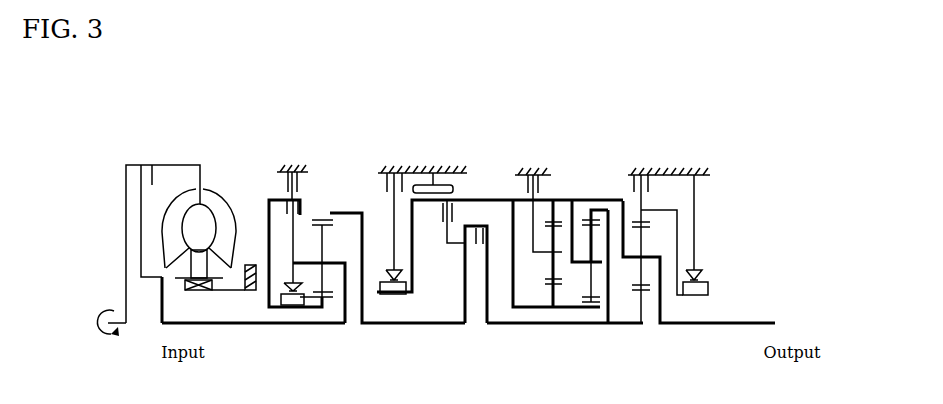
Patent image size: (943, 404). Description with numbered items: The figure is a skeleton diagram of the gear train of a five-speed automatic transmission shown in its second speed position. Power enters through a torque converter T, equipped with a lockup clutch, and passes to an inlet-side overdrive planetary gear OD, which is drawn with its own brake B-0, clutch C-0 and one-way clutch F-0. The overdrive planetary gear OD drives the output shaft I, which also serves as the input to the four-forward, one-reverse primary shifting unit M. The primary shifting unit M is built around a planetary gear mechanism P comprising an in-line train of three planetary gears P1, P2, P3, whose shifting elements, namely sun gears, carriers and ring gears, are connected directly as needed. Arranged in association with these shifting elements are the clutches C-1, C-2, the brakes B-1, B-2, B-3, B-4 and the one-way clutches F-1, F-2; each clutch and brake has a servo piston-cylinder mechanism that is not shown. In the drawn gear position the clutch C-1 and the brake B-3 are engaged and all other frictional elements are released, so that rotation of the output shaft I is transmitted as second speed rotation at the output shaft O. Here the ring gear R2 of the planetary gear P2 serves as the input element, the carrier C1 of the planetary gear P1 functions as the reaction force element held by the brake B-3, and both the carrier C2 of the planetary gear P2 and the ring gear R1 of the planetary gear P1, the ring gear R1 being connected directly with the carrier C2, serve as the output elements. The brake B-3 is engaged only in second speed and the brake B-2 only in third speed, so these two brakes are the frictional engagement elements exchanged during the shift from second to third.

The torque converter T is at (181, 165).
The inlet-side overdrive planetary gear OD is at (330, 165).
The brake B-0 is at (292, 182).
The clutch C-0 is at (316, 248).
The one-way clutch F-0 is at (292, 260).
The output shaft I is at (389, 325).
The brake B-2 is at (422, 170).
The brake B-1 is at (433, 170).
The one-way clutch F-1 is at (393, 243).
The clutch C-2 is at (500, 246).
The clutch C-1 is at (481, 264).
The ring gear R1 is at (553, 208).
The brake B-3 is at (533, 170).
The primary shifting unit M is at (558, 150).
The carrier C1 is at (547, 253).
The ring gear R2 is at (590, 201).
The carrier C2 is at (580, 262).
The planetary gear mechanism P is at (608, 199).
The planetary gear P1 is at (551, 341).
The planetary gear P2 is at (593, 332).
The planetary gear P3 is at (634, 331).
The output shaft O is at (700, 325).
The brake B-4 is at (669, 235).
The one-way clutch F-2 is at (674, 245).